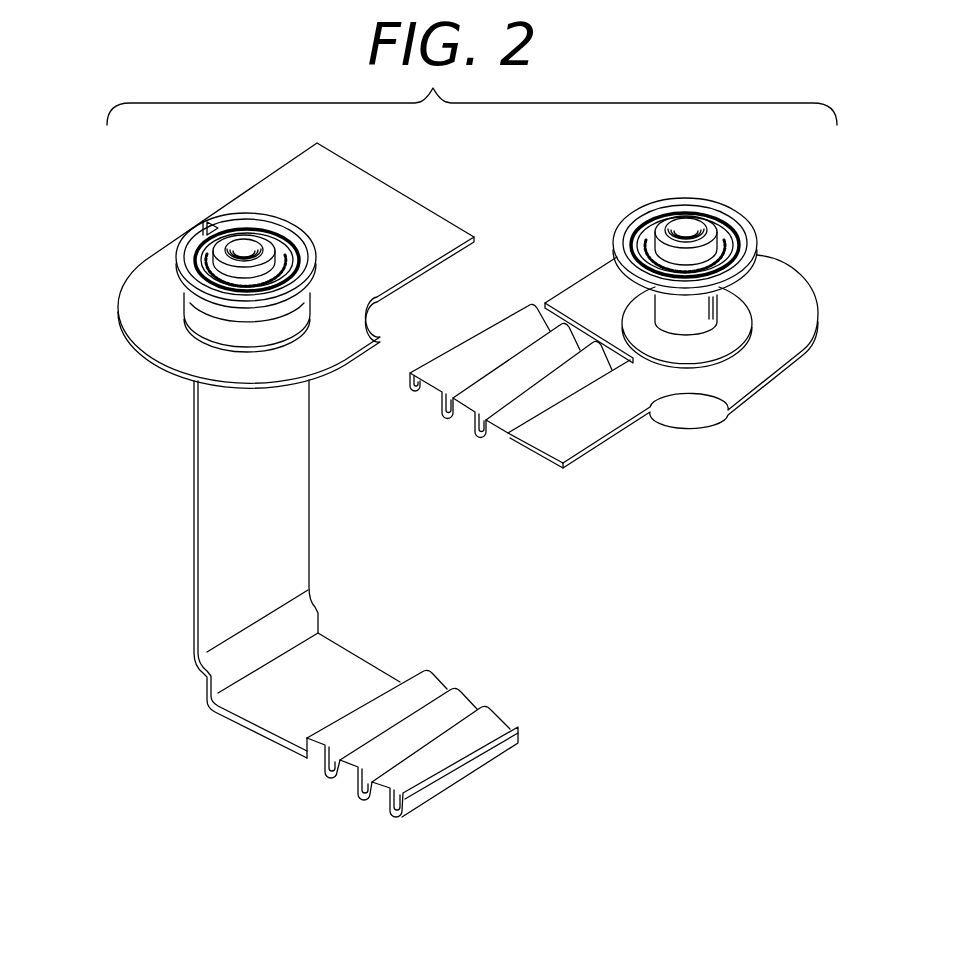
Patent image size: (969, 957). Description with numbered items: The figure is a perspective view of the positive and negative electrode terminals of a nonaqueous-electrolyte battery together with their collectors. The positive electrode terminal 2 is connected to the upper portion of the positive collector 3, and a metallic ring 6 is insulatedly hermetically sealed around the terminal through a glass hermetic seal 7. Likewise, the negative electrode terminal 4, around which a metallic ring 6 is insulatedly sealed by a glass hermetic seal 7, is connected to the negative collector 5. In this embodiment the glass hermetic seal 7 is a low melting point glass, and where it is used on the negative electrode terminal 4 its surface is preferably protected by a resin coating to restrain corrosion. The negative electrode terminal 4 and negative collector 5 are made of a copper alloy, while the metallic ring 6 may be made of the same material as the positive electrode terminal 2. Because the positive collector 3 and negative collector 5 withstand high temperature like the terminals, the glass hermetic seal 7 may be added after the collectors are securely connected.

The positive electrode terminal 2 is at (264, 240).
The positive collector 3 is at (180, 497).
The negative electrode terminal 4 is at (707, 223).
The negative collector 5 is at (620, 404).
The metallic ring 6 is at (300, 247).
The glass hermetic seal 7 is at (190, 240).